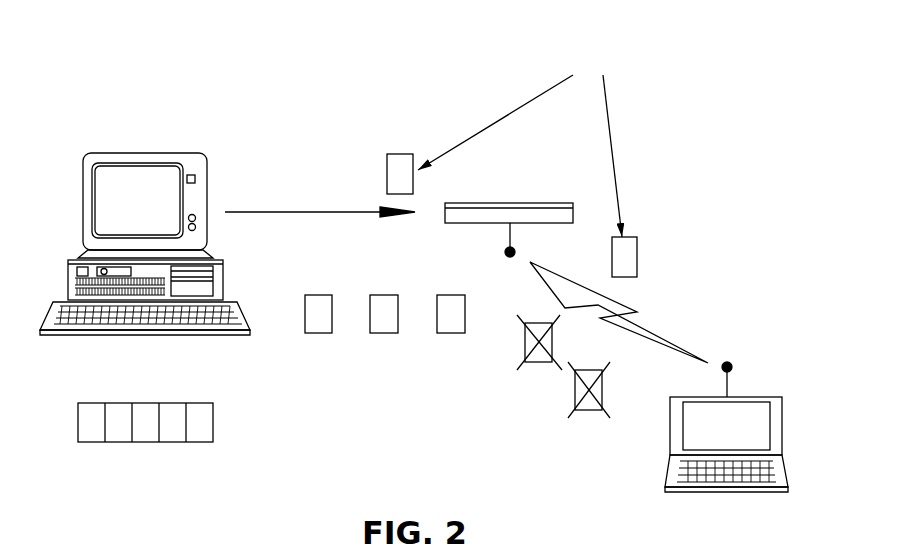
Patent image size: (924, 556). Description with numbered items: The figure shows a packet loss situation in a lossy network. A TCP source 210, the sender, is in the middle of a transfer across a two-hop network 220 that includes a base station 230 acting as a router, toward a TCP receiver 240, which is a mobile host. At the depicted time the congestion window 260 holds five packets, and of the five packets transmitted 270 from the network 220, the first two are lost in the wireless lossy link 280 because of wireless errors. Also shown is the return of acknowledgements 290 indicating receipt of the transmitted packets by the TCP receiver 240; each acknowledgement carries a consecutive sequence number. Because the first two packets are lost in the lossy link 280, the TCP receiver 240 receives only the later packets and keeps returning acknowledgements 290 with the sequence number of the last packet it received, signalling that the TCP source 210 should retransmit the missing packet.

The TCP source 210 is at (209, 180).
The two-hop network 220 is at (337, 157).
The base station 230 is at (472, 223).
The TCP receiver 240 is at (670, 427).
The congestion window 260 is at (77, 423).
The transmitted packets 270 is at (320, 334).
The lossy link 280 is at (652, 337).
The acknowledgements 290 is at (585, 53).